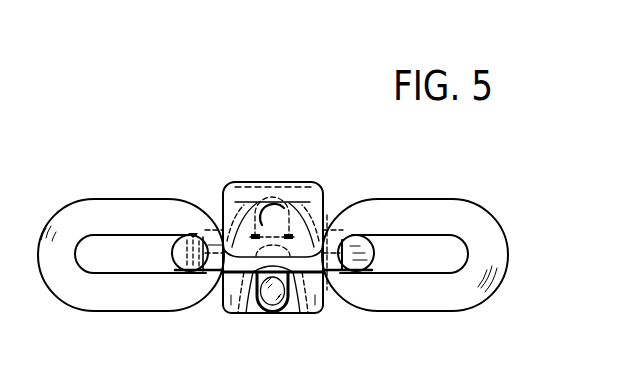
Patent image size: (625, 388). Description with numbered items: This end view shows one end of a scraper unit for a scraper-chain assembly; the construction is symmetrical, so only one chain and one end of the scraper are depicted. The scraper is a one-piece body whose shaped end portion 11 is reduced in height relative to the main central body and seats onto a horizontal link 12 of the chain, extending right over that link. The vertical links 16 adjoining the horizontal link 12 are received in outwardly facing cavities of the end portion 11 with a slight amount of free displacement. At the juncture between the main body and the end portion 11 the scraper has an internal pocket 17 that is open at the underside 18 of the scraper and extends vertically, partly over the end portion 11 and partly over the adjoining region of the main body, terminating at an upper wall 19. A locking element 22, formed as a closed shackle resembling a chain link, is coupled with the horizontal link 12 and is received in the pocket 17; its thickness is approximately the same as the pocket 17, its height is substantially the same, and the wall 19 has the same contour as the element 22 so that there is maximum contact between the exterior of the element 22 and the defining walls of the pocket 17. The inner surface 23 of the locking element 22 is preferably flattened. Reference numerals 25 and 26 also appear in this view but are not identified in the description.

The end portion 11 is at (229, 188).
The horizontal link 12 is at (177, 278).
The vertical link 16 is at (62, 213).
The internal pocket 17 is at (320, 186).
The underside 18 is at (250, 318).
The upper wall 19 is at (257, 235).
The locking element 22 is at (286, 208).
The inner surface 23 is at (224, 198).
The pin head 25 is at (350, 232).
The cross pin 26 is at (203, 233).